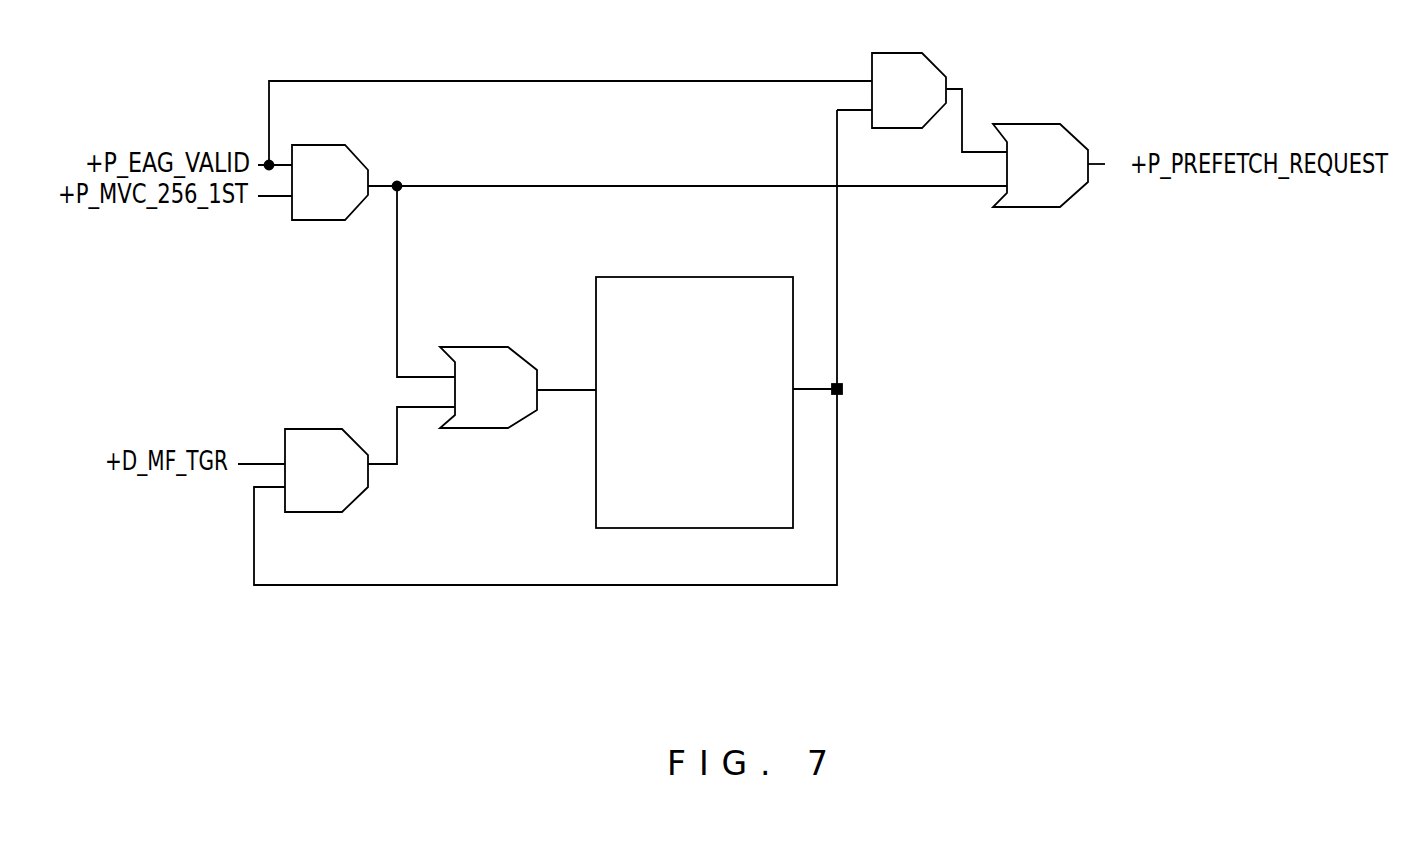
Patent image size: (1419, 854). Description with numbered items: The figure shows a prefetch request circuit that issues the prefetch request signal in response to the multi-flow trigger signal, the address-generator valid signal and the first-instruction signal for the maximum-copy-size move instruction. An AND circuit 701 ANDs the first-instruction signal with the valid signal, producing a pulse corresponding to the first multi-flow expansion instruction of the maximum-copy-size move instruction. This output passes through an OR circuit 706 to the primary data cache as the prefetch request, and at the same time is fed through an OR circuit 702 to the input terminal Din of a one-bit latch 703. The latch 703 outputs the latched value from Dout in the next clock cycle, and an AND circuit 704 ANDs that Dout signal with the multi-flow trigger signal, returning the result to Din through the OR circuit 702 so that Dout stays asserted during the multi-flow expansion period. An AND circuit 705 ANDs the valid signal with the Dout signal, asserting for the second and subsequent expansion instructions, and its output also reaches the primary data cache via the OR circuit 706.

The AND circuit 701 is at (356, 157).
The OR circuit 702 is at (479, 347).
The 1-bit latch 703 is at (642, 277).
The AND circuit 704 is at (307, 427).
The AND circuit 705 is at (934, 62).
The OR circuit 706 is at (1030, 123).